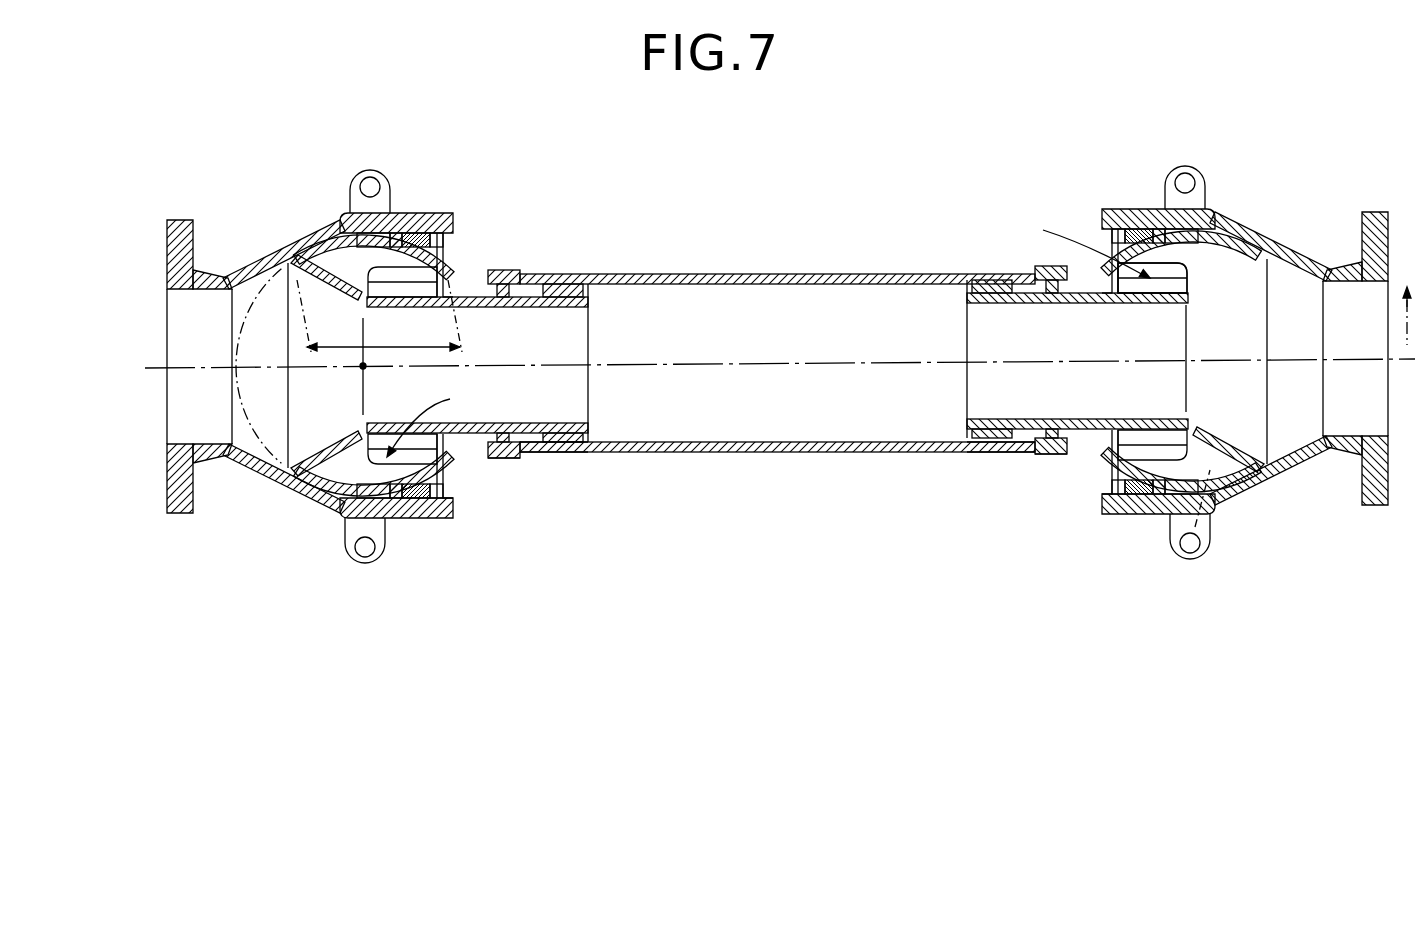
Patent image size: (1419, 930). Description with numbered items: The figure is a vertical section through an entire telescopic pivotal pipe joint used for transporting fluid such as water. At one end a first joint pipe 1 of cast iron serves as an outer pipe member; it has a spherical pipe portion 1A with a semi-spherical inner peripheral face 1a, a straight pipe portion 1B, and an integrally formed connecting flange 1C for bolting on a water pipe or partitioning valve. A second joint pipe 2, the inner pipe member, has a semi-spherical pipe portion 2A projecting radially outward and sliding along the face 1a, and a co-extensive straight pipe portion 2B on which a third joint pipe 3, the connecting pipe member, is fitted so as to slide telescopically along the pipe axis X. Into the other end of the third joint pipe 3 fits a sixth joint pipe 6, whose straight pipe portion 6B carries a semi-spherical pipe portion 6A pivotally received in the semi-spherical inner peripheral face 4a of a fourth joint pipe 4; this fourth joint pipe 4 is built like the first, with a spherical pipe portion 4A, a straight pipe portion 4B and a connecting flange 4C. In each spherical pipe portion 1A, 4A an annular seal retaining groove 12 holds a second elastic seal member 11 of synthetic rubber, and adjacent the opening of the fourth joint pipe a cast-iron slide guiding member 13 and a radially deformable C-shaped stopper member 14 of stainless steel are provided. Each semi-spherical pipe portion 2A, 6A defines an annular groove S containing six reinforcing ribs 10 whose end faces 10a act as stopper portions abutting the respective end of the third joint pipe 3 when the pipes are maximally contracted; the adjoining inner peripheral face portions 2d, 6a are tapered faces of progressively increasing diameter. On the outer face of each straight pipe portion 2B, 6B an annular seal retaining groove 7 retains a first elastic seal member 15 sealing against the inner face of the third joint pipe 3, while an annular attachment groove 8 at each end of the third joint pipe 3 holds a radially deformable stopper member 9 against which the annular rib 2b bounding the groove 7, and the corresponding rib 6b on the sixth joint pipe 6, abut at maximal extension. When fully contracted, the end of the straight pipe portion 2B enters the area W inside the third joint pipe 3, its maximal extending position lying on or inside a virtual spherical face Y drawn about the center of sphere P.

The first joint pipe 1 is at (1309, 307).
The spherical pipe portion 1A is at (1271, 326).
The straight pipe portion 1B is at (1355, 264).
The connecting flange 1C is at (1372, 212).
The semi-spherical inner peripheral face 1a is at (1260, 460).
The second joint pipe 2 is at (1091, 406).
The semi-spherical pipe portion 2A is at (1133, 510).
The straight pipe portion 2B is at (1087, 427).
The annular rib 2b is at (1020, 447).
The inner peripheral face portion 2d is at (1225, 298).
The third joint pipe 3 is at (663, 275).
The fourth joint pipe 4 is at (256, 311).
The spherical pipe portion 4A is at (262, 275).
The straight pipe portion 4B is at (213, 272).
The connecting flange 4C is at (187, 217).
The semi-spherical inner peripheral face 4a is at (307, 296).
The sixth joint pipe 6 is at (464, 409).
The semi-spherical pipe portion 6A is at (423, 520).
The straight pipe portion 6B is at (463, 440).
The inner peripheral face portion 6a is at (330, 440).
The end of stub shaft of first joint 6b is at (520, 458).
The annular seal retaining groove 7 is at (573, 280).
The annular attachment groove 8 is at (505, 432).
The stopper member 9 is at (507, 298).
The reinforcing ribs 10 is at (345, 262).
The one end of reinforcing rib 10a is at (452, 278).
The second elastic seal member 11 is at (373, 218).
The annular seal retaining groove 12 is at (1212, 596).
The slide guiding member 13 is at (413, 225).
The C-shaped stopper member 14 is at (448, 232).
The first elastic seal member 15 is at (567, 452).
The joint center P is at (365, 369).
The annular groove S is at (768, 333).
The area W is at (405, 342).
The pipe axis X is at (1406, 302).
The virtual spherical face Y is at (262, 462).